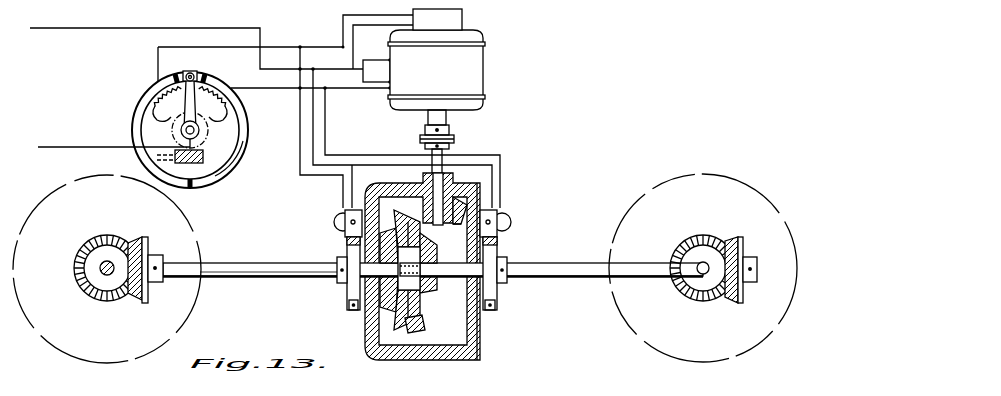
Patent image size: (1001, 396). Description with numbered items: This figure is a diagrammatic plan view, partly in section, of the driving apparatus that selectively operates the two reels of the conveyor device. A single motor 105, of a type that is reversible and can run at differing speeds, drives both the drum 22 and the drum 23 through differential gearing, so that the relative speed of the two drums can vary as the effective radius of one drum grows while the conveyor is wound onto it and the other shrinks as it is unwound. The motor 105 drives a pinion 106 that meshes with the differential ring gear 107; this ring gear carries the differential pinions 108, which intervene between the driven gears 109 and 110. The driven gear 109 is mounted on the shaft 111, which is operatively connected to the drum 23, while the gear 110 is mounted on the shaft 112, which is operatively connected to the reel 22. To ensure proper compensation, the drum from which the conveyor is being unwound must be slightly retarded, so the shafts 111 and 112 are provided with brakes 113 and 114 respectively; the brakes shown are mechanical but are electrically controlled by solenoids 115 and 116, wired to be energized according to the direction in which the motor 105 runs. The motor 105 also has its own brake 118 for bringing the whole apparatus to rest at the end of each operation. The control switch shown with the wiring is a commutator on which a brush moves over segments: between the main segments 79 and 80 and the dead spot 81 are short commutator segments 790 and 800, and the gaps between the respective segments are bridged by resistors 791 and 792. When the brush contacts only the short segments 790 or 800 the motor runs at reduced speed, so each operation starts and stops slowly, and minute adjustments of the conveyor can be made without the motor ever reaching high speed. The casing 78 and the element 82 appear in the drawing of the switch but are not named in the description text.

The drum 22 is at (655, 208).
The drum 23 is at (180, 249).
The switch casing 78 is at (133, 133).
The commutator segment 79 is at (141, 115).
The commutator segment 80 is at (236, 152).
The dead spot 81 is at (183, 120).
The switch arm contact 82 is at (199, 122).
The motor 105 is at (466, 76).
The pinion 106 is at (463, 214).
The differential ring gear 107 is at (411, 333).
The differential pinions 108 is at (397, 230).
The driven gear 109 is at (390, 305).
The driven gear 110 is at (432, 292).
The shaft 111 is at (259, 268).
The shaft 112 is at (568, 268).
The brake 113 is at (350, 287).
The brake 114 is at (494, 292).
The solenoid 115 is at (336, 217).
The solenoid 116 is at (512, 221).
The motor brake 118 is at (450, 20).
The short commutator segment 790 is at (170, 78).
The resistor 791 is at (158, 105).
The resistor 792 is at (216, 103).
The short commutator segment 800 is at (206, 78).